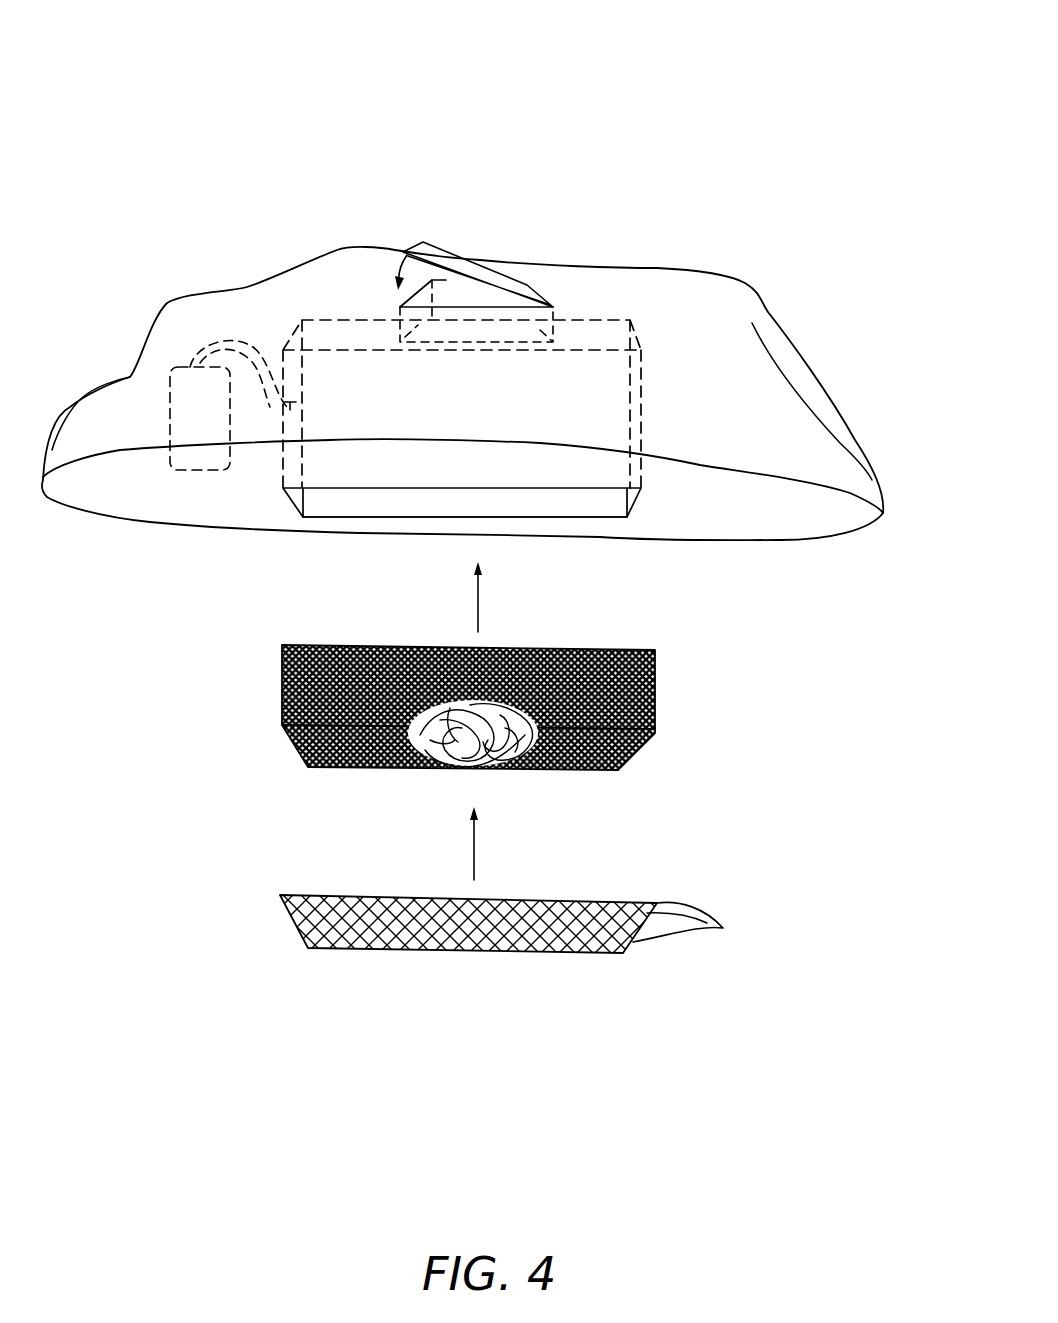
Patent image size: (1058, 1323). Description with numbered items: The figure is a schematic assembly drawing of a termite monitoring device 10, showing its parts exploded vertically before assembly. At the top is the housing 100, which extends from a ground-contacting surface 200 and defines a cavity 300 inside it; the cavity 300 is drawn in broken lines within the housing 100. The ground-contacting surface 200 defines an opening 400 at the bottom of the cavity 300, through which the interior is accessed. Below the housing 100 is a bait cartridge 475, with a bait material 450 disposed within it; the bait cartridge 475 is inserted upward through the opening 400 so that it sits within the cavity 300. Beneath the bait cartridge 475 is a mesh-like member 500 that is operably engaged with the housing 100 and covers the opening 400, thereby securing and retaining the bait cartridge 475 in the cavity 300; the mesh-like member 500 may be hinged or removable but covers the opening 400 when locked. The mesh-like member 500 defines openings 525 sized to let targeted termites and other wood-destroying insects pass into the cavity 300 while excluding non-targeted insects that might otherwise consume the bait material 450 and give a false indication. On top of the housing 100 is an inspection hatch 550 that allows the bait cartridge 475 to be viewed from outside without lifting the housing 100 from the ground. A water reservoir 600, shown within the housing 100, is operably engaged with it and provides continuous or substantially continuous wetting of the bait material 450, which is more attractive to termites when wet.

The termite monitoring device 10 is at (645, 122).
The housing 100 is at (740, 407).
The ground-contacting surface 200 is at (190, 500).
The cavity 300 is at (618, 409).
The opening 400 is at (512, 506).
The bait material 450 is at (533, 770).
The bait cartridge 475 is at (655, 700).
The mesh-like member 500 is at (492, 975).
The openings 525 is at (712, 925).
The inspection hatch 550 is at (445, 255).
The water reservoir 600 is at (177, 400).